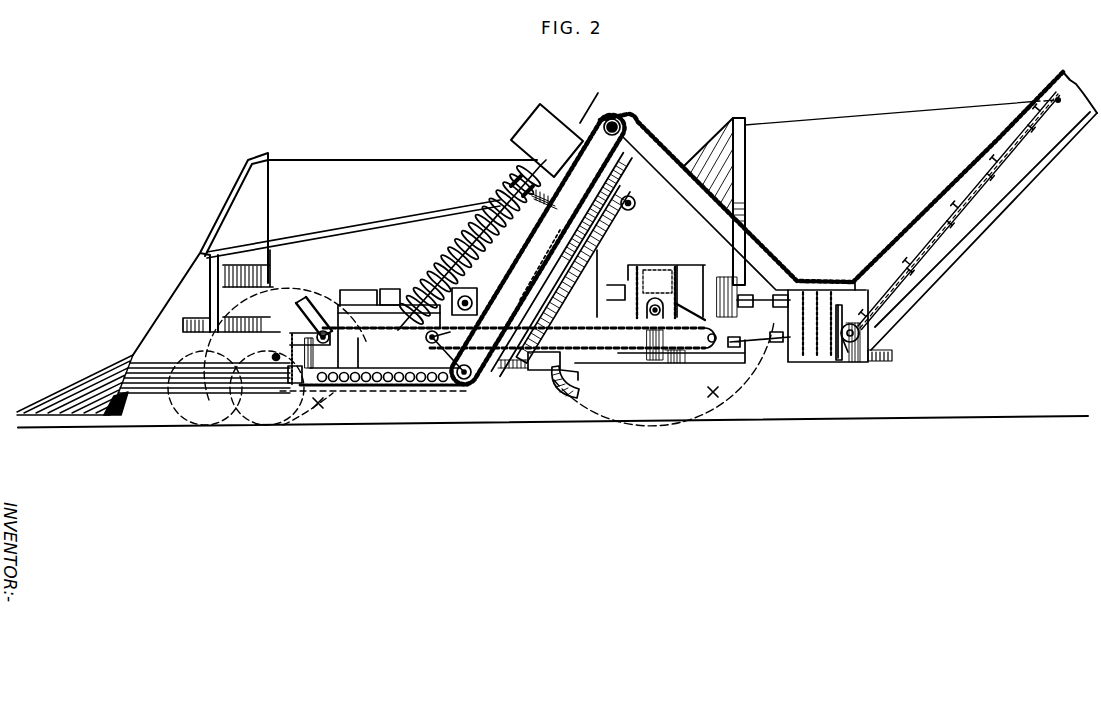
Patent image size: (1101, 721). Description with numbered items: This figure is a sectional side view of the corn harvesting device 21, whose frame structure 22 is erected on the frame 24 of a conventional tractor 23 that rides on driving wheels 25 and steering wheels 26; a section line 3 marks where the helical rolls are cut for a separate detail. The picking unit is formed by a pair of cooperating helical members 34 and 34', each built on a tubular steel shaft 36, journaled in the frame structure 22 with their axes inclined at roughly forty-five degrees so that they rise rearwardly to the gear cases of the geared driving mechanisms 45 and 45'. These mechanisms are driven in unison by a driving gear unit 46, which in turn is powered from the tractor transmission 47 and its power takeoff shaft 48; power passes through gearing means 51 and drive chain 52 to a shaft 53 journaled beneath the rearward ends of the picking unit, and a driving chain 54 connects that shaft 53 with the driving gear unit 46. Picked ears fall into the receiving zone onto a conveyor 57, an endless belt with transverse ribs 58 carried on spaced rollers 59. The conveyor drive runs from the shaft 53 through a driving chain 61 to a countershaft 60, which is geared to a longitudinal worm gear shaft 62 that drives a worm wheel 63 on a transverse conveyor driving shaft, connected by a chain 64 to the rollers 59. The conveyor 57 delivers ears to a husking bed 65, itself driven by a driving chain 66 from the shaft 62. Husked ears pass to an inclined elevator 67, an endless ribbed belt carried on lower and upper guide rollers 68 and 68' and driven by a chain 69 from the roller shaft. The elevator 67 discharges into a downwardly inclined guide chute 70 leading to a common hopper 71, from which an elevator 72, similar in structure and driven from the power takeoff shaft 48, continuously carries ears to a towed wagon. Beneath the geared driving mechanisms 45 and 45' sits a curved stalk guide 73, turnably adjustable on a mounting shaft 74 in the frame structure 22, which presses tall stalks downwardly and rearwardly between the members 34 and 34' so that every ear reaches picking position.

The section line 3- 3 is at (590, 122).
The corn harvesting device 21 is at (186, 120).
The frame structure 22 is at (212, 250).
The tractor 23 is at (342, 153).
The tractor frame 24 is at (360, 192).
The driving wheels 25 is at (716, 393).
The steering wheels 26 is at (340, 404).
The helical member 34 is at (382, 226).
The helical member 34' is at (469, 248).
The tubular steel shaft 36 is at (457, 241).
The geared driving mechanism 45 is at (547, 140).
The geared driving mechanism 45' is at (553, 155).
The driving gear unit 46 is at (667, 182).
The transmission 47 is at (708, 304).
The power takeoff shaft 48 is at (760, 303).
The gearing means 51 is at (716, 356).
The drive chain 52 is at (619, 352).
The shaft 53 is at (526, 362).
The driving chain 54 is at (634, 232).
The conveyor 57 is at (355, 322).
The transverse rib 58 is at (388, 308).
The roller 59 is at (323, 328).
The countershaft 60 is at (470, 294).
The driving chain 61 is at (492, 367).
The shaft 62 is at (369, 303).
The worm wheel 63 is at (315, 303).
The chain 64 is at (288, 338).
The husking bed 65 is at (376, 380).
The driving chain 66 is at (259, 363).
The inclined elevator 67 is at (628, 133).
The guide roller 68 is at (454, 389).
The guide roller 68' is at (548, 232).
The chain 69 is at (537, 227).
The guide chute 70 is at (748, 258).
The hopper 71 is at (844, 350).
The elevator 72 is at (975, 181).
The stalk guide 73 is at (560, 385).
The mounting shaft 74 is at (567, 374).